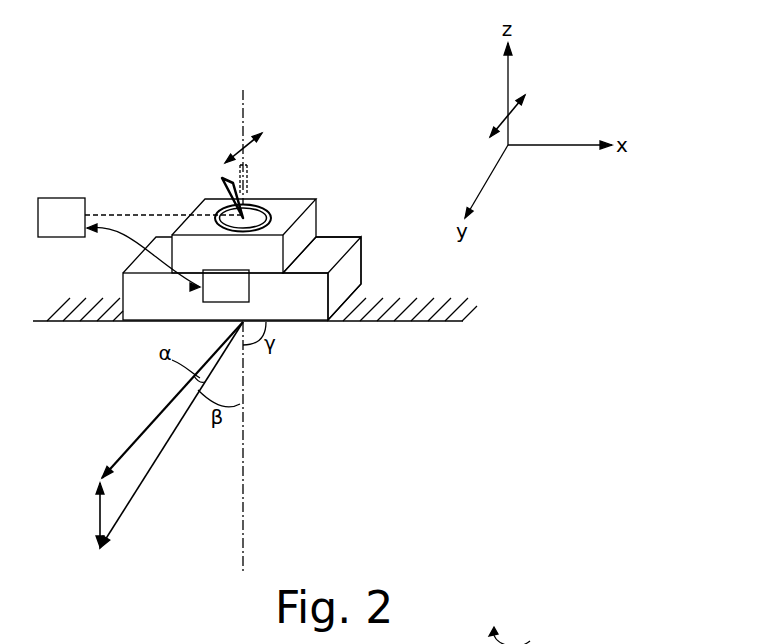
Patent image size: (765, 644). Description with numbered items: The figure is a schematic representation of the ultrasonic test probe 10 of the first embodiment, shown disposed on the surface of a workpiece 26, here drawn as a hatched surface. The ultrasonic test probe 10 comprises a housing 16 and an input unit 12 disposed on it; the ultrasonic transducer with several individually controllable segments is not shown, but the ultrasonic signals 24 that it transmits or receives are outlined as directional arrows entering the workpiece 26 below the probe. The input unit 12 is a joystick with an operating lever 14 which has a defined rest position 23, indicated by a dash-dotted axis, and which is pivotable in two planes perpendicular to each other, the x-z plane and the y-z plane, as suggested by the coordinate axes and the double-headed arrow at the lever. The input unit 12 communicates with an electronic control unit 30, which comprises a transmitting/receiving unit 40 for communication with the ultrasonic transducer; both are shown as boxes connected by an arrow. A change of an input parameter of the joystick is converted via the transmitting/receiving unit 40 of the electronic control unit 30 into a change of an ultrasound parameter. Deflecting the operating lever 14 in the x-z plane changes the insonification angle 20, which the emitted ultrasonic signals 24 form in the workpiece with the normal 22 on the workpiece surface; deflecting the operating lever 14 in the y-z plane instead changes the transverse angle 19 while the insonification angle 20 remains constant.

The ultrasonic test probe 10 is at (330, 222).
The input unit 12 is at (220, 207).
The operating lever 14 is at (223, 176).
The housing 16 is at (320, 288).
The transverse angle 19 is at (215, 357).
The insonification angle 20 is at (233, 395).
The normal 22 is at (244, 485).
The rest position 23 is at (244, 93).
The ultrasonic signals 24 is at (133, 500).
The workpiece 26 is at (433, 317).
The electronic control unit 30 is at (119, 244).
The transmitting/receiving unit 40 is at (226, 286).